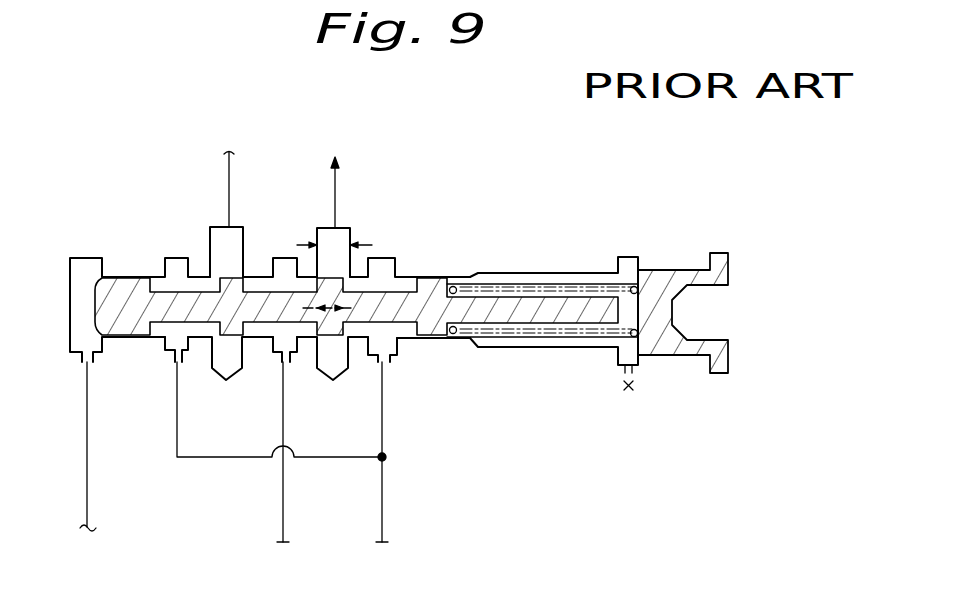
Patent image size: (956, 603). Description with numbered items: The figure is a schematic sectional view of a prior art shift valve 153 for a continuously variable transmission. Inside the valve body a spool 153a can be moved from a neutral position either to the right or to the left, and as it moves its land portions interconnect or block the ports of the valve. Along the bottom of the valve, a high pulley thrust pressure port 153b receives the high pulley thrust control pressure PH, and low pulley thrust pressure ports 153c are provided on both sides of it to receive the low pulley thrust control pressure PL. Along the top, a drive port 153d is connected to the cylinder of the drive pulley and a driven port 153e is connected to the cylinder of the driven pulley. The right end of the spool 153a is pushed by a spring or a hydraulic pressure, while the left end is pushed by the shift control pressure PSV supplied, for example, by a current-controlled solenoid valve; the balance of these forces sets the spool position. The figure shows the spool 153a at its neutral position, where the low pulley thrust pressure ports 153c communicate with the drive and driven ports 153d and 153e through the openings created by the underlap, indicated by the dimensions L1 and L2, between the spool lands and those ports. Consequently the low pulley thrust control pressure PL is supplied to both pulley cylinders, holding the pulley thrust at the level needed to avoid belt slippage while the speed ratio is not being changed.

The shift valve 153 is at (593, 233).
The spool 153a is at (436, 280).
The high pulley thrust pressure port 153b is at (288, 358).
The low pulley thrust pressure ports 153c is at (181, 360).
The drive port 153d is at (340, 228).
The driven port 153e is at (220, 228).
The underlap dimension L1 is at (344, 230).
The underlap dimension L2 is at (333, 305).
The shift control pressure PSV is at (64, 446).
The low pulley thrust control pressure PL is at (280, 452).
The high pulley thrust control pressure PH is at (267, 452).